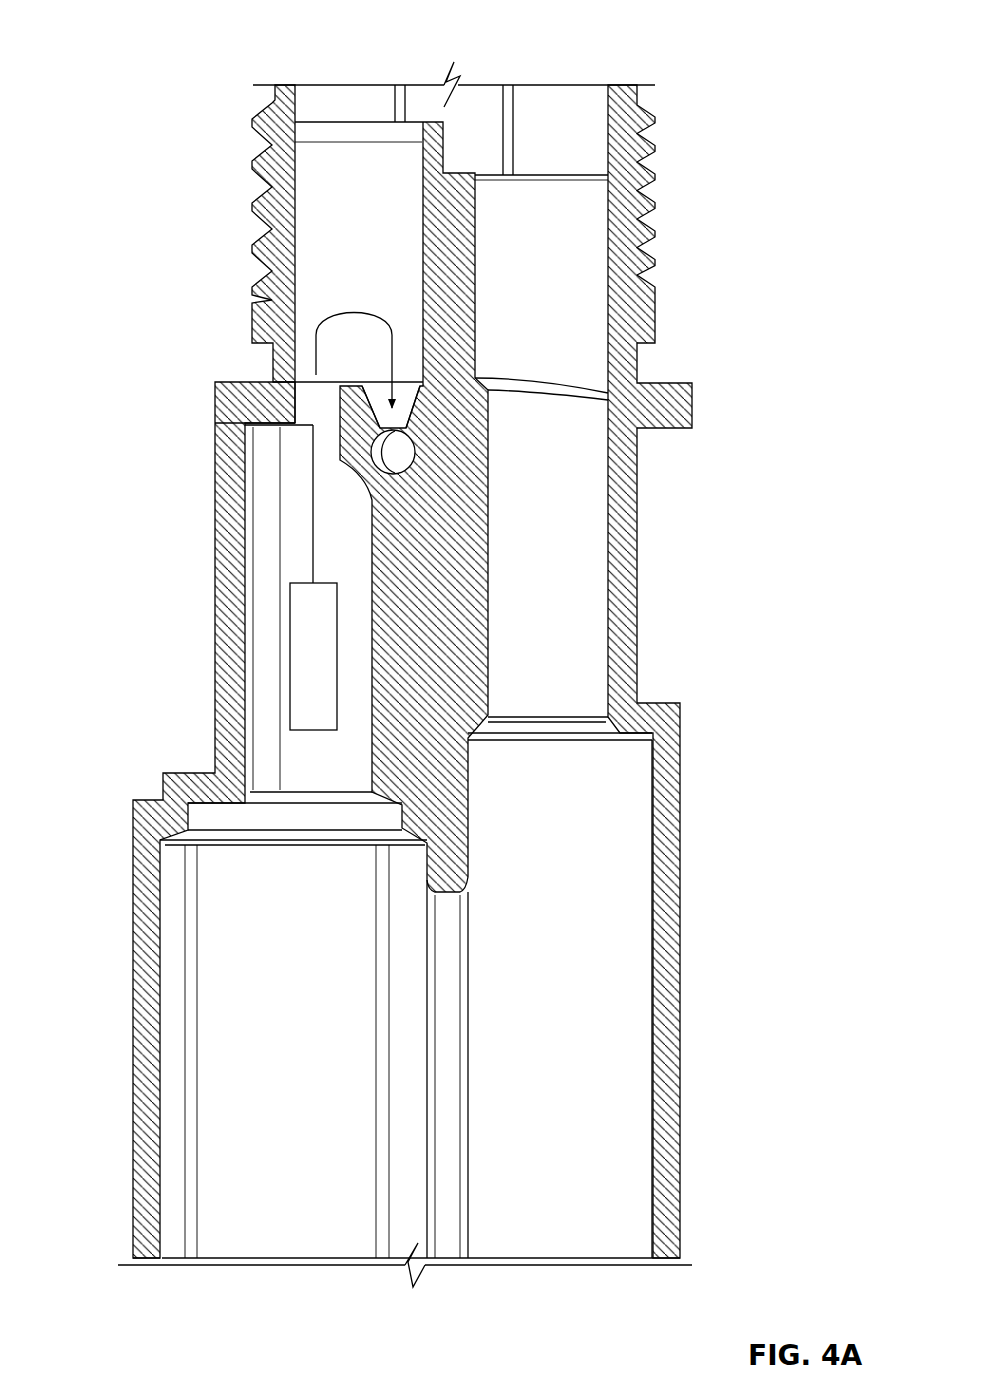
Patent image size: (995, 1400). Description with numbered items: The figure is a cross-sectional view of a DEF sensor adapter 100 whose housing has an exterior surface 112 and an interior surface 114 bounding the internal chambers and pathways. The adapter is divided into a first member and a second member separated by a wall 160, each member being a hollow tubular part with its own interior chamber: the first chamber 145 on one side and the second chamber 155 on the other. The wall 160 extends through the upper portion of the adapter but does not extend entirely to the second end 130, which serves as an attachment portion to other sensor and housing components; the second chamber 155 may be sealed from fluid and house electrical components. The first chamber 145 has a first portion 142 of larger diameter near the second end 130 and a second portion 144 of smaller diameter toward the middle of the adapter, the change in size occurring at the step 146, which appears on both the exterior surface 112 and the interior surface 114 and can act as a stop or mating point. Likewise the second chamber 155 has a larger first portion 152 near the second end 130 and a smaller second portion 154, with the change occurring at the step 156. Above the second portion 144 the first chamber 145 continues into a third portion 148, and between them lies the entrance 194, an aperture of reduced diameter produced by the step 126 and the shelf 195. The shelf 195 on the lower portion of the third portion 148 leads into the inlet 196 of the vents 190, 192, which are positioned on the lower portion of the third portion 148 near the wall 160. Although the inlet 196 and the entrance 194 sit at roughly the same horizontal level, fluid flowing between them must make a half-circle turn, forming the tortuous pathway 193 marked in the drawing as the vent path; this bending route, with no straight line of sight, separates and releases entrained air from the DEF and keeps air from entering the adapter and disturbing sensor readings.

The sensor adapter 100 is at (138, 31).
The exterior surface 112 is at (133, 1217).
The interior surface 114 is at (173, 1237).
The step 126 is at (283, 418).
The second end 130 is at (679, 1257).
The first portion 142 is at (213, 1001).
The second portion 144 is at (263, 548).
The first interior chamber 145 is at (294, 1235).
The step 146 is at (175, 820).
The third portion 148 is at (314, 183).
The first portion 152 is at (632, 1012).
The second portion 154 is at (592, 549).
The second interior chamber 155 is at (524, 1236).
The step 156 is at (627, 730).
The wall 160 is at (441, 236).
The vent 190 is at (376, 445).
The vent 192 is at (272, 418).
The tortuous pathway 193 is at (311, 483).
The entrance 194 is at (312, 360).
The shelf 195 is at (316, 376).
The inlet 196 is at (387, 381).